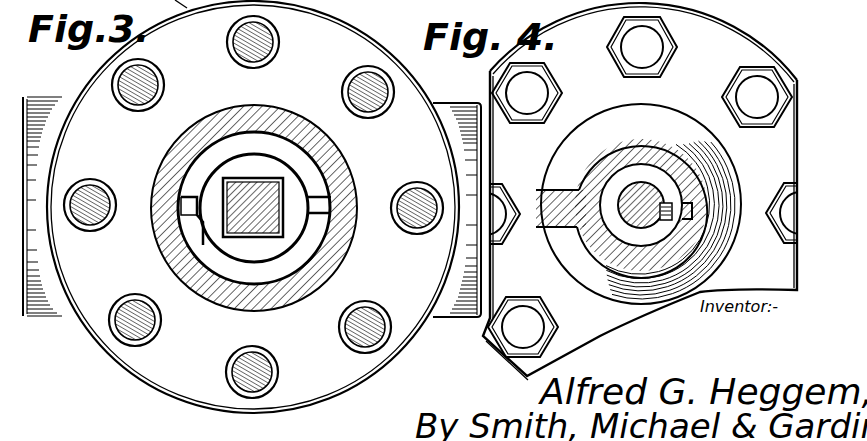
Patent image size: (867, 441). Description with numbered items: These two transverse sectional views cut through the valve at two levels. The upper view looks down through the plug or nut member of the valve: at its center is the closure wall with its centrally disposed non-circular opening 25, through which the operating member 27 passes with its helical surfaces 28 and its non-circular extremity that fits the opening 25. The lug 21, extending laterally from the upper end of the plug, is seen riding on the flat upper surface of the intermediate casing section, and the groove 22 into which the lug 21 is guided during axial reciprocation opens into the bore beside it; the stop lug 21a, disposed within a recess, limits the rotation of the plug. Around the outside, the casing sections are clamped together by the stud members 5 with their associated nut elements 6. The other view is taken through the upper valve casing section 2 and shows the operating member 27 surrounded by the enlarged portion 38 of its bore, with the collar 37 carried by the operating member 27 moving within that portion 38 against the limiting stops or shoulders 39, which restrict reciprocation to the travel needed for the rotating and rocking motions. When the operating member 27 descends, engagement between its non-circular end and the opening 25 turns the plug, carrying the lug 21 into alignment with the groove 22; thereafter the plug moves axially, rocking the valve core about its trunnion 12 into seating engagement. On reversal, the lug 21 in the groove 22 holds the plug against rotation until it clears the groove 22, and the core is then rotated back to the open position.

In FIG. 4, the upper valve casing section 2 is at (742, 33).
In FIG. 3, the stud members 5 is at (97, 182).
In FIG. 4, the stud members 5 is at (760, 108).
In FIG. 4, the nut elements 6 is at (732, 79).
In FIG. 3, the trunnion 12 is at (408, 21).
In FIG. 3, the lug 21 is at (187, 202).
In FIG. 3, the stop lug 21a is at (187, 240).
In FIG. 3, the groove 22 is at (323, 210).
In FIG. 3, the non-circular opening 25 is at (265, 240).
In FIG. 4, the operating member 27 is at (620, 200).
In FIG. 3, the helical surfaces 28 is at (245, 183).
In FIG. 4, the collar 37 is at (622, 183).
In FIG. 4, the enlarged portion of the bore 38 is at (622, 245).
In FIG. 4, the limiting stops or shoulders 39 is at (690, 215).